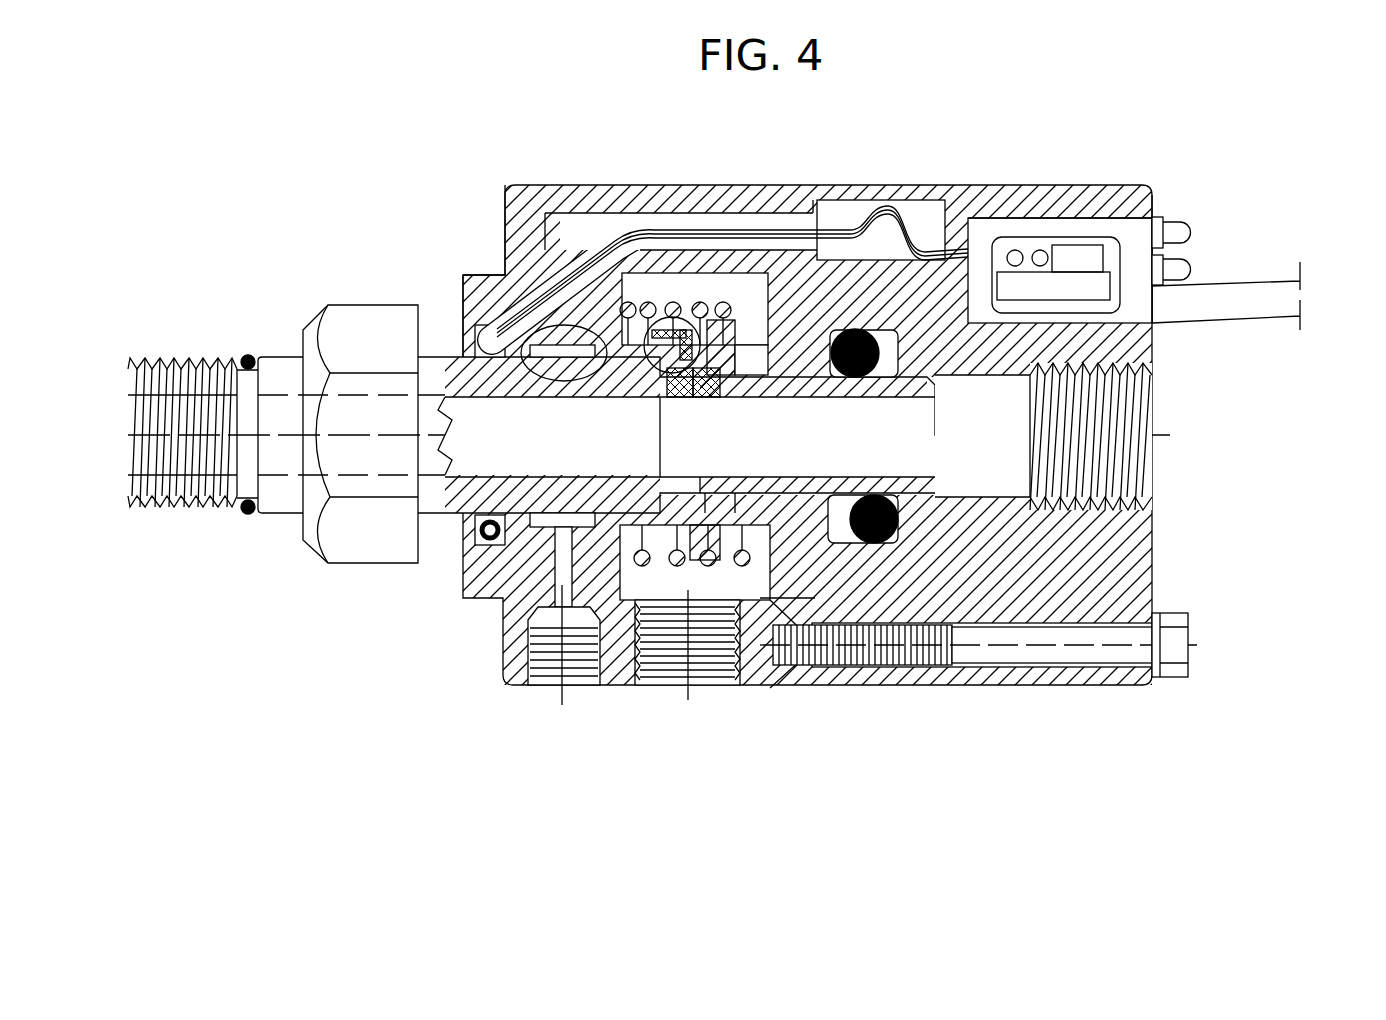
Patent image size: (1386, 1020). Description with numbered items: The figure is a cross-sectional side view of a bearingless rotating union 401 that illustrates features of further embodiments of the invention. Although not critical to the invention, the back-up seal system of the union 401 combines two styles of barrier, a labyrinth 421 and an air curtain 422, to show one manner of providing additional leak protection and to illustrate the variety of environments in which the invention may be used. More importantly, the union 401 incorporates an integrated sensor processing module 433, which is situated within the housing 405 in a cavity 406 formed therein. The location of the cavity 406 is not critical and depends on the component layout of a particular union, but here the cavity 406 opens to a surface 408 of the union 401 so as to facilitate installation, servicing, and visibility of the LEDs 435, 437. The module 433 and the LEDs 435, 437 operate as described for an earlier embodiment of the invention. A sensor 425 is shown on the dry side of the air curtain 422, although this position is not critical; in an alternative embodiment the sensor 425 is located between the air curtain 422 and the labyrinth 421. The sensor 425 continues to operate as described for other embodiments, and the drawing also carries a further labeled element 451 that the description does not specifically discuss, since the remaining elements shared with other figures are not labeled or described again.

The union 401 is at (481, 625).
The housing 405 is at (1135, 207).
The cavity 406 is at (1043, 227).
The surface 408 is at (1153, 343).
The labyrinth 421 is at (655, 323).
The air curtain 422 is at (572, 325).
The sensor 425 is at (463, 297).
The integrated sensor processing module 433 is at (1003, 235).
The LED 435 is at (1180, 227).
The LED 437 is at (1177, 265).
The sensor wire 451 is at (875, 217).